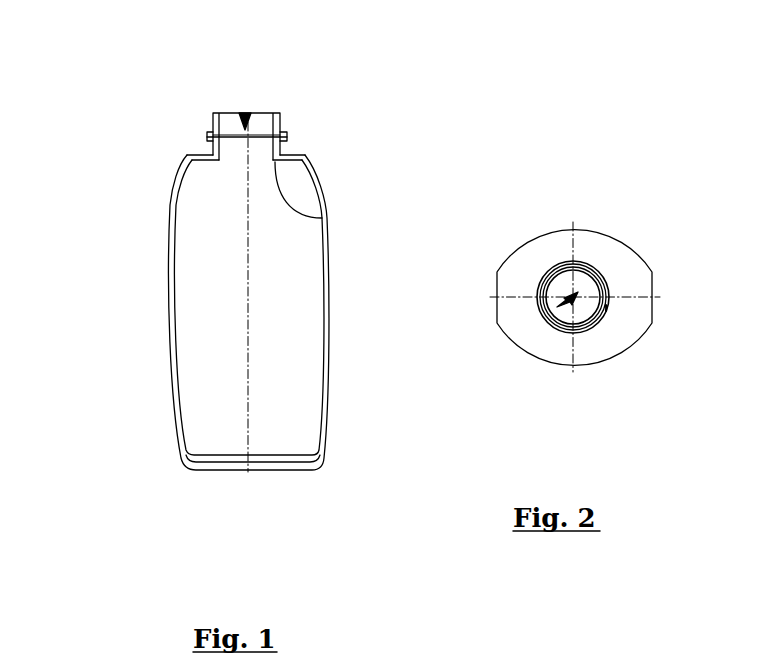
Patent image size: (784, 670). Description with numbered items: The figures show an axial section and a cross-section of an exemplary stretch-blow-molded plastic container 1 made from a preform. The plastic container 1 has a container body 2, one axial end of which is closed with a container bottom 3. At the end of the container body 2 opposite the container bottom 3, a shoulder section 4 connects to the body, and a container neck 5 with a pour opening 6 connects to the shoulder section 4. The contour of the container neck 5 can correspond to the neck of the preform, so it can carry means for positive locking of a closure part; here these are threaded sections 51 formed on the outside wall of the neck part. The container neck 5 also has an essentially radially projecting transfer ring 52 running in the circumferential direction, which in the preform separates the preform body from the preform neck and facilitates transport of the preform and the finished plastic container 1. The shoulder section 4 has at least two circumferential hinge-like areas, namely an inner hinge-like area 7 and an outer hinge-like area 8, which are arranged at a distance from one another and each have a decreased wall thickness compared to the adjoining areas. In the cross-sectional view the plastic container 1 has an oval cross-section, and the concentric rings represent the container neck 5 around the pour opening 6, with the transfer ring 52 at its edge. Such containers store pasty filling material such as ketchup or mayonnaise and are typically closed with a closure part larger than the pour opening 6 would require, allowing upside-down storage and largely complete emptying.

In FIG. 1, the plastic container 1 is at (117, 165).
In FIG. 2, the plastic container 1 is at (599, 138).
In FIG. 1, the container body 2 is at (170, 318).
In FIG. 1, the container bottom 3 is at (210, 463).
In FIG. 1, the shoulder section 4 is at (314, 170).
In FIG. 2, the shoulder section 4 is at (630, 265).
In FIG. 1, the container neck 5 is at (280, 124).
In FIG. 2, the container neck 5 is at (563, 261).
In FIG. 1, the threaded sections 51 is at (204, 129).
In FIG. 1, the transfer ring 52 is at (288, 138).
In FIG. 2, the transfer ring 52 is at (607, 310).
In FIG. 1, the pour opening 6 is at (245, 113).
In FIG. 2, the pour opening 6 is at (550, 317).
In FIG. 1, the inner hinge-like area 7 is at (323, 219).
In FIG. 1, the outer hinge-like area 8 is at (187, 152).